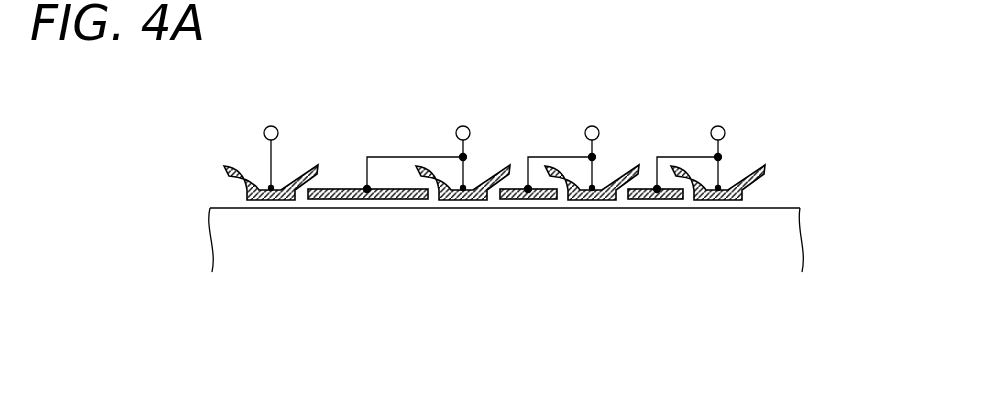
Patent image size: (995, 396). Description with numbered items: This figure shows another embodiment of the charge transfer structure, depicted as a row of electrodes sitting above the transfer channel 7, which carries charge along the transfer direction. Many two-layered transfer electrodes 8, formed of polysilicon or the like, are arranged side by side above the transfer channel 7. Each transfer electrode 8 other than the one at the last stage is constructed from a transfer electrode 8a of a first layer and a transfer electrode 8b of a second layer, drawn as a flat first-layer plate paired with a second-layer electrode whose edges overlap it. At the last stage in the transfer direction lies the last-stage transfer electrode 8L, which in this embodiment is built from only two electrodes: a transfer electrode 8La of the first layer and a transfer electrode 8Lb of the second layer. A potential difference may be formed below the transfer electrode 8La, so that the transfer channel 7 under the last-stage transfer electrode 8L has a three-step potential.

The transfer channel 7 is at (783, 237).
The transfer electrode 8 is at (583, 76).
The transfer electrode of a first layer 8a is at (530, 189).
The transfer electrode of a second layer 8b is at (585, 188).
The last-stage transfer electrode 8L is at (474, 76).
The transfer electrode of a first layer 8La is at (343, 188).
The transfer electrode of a second layer 8Lb is at (452, 188).